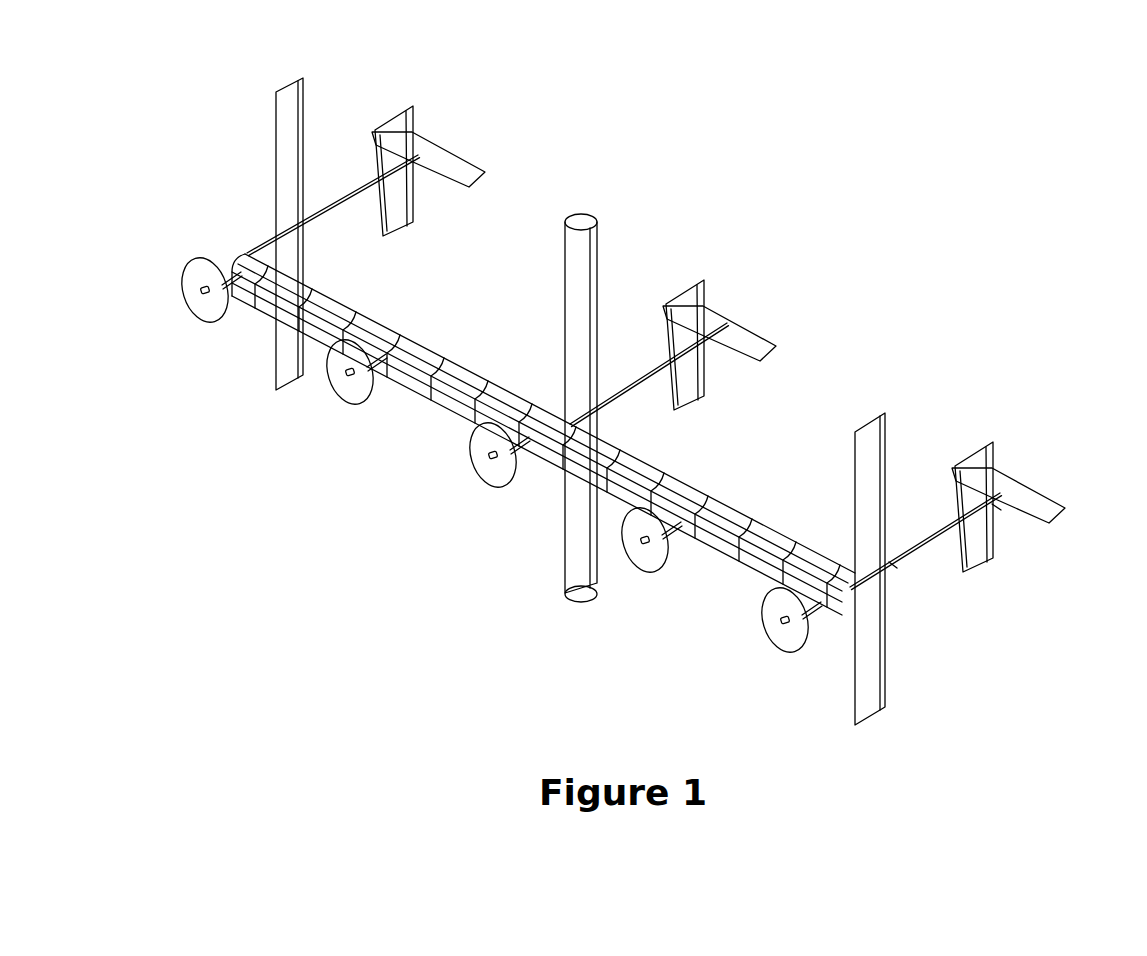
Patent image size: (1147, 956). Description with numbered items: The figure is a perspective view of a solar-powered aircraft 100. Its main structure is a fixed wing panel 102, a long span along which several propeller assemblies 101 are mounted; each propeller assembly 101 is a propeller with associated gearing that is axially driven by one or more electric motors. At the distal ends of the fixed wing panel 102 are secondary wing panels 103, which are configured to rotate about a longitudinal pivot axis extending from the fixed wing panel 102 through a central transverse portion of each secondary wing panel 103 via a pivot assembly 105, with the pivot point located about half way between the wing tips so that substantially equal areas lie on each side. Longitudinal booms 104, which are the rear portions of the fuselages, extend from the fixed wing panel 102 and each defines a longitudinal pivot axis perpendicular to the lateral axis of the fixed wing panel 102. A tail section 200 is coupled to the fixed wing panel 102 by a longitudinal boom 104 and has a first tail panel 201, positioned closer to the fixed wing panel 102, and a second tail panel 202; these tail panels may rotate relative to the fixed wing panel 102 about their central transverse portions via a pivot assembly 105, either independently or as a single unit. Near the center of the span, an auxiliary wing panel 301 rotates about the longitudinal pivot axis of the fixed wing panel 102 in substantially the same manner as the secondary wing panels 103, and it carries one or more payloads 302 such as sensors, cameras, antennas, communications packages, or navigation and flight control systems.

The solar-powered aircraft 100 is at (982, 137).
The propeller assembly 101 is at (488, 492).
The fixed wing panel 102 is at (440, 388).
The secondary wing panel 103 is at (279, 168).
The longitudinal boom 104 is at (325, 207).
The pivot assembly 105 is at (893, 566).
The tail section 200 is at (1037, 525).
The first tail panel 201 is at (986, 571).
The second tail panel 202 is at (1016, 477).
The auxiliary wing panel 301 is at (562, 306).
The payload 302 is at (587, 215).